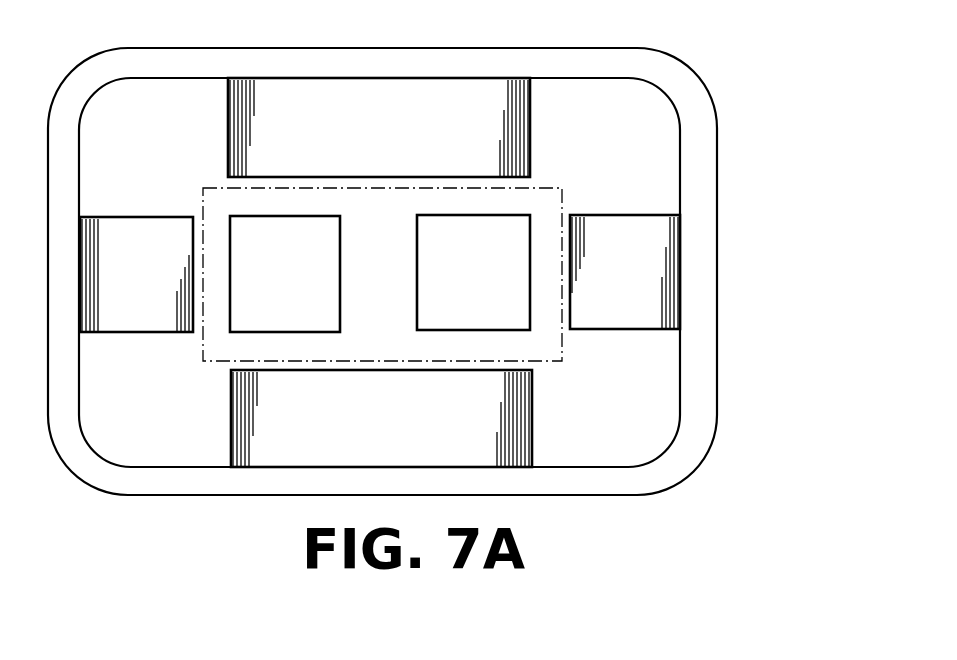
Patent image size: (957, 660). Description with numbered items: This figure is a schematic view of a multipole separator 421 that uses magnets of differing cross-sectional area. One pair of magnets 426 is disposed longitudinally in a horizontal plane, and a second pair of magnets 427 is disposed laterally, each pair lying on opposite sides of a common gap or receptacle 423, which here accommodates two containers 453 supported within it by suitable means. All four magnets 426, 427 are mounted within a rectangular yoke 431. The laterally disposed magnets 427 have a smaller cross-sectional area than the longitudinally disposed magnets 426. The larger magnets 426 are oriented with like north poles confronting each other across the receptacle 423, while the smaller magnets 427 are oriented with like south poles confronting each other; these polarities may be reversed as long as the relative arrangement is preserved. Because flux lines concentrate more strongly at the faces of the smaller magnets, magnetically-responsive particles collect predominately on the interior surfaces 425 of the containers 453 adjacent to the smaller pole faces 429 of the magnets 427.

The multipole separator 421 is at (717, 92).
The rectangular yoke 431 is at (702, 268).
The longitudinally disposed magnets 426 is at (514, 140).
The laterally disposed magnets 427 is at (122, 315).
The interior surfaces 425 is at (232, 263).
The containers 453 is at (417, 266).
The gap or receptacle 423 is at (423, 360).
The smaller pole faces 429 is at (193, 297).